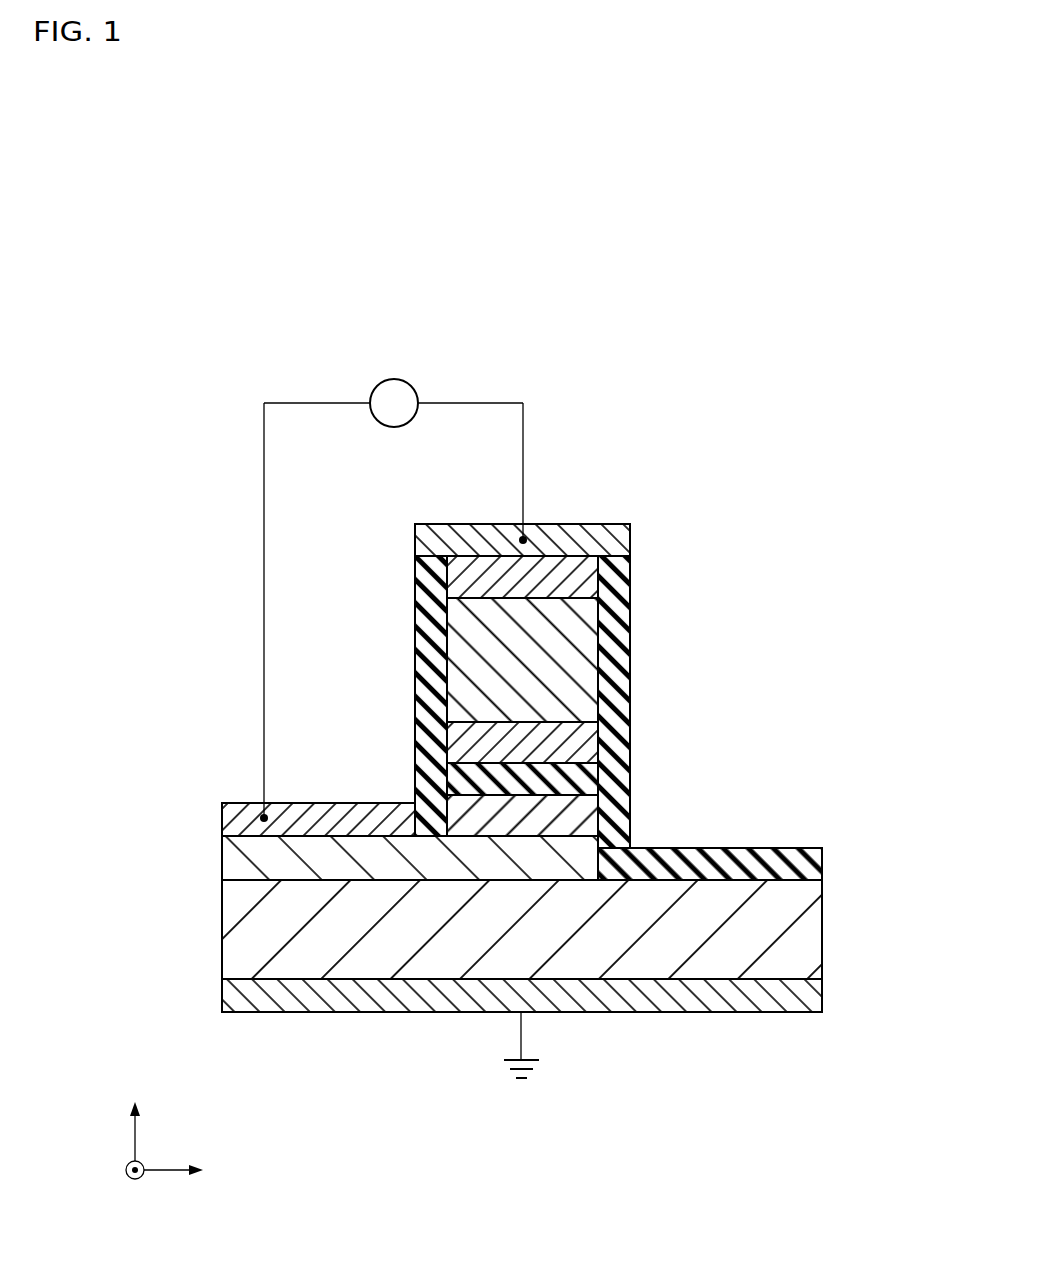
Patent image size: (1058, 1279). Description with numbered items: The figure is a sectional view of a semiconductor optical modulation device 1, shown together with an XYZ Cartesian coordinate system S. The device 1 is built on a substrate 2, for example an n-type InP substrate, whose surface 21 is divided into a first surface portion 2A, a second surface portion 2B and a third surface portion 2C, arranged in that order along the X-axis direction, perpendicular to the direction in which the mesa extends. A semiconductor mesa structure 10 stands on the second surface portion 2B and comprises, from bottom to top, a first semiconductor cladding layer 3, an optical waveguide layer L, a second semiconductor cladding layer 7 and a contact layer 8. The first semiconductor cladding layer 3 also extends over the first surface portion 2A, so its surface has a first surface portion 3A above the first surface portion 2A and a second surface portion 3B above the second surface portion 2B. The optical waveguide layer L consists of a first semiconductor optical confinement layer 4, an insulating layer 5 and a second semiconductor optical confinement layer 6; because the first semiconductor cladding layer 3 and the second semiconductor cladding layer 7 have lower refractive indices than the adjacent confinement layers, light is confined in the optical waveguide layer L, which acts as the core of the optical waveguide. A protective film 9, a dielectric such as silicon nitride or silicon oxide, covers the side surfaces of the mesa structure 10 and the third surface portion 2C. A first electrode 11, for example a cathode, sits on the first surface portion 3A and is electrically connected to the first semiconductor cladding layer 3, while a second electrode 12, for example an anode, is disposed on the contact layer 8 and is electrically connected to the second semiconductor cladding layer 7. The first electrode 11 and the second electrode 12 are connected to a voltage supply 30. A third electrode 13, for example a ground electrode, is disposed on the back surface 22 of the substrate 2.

The semiconductor optical modulation device 1 is at (213, 357).
The substrate 2 is at (822, 928).
The first surface portion 2A is at (444, 892).
The second surface portion 2B is at (596, 892).
The third surface portion 2C is at (820, 892).
The first semiconductor cladding layer 3 is at (596, 862).
The first surface portion 3A is at (444, 850).
The second surface portion 3B is at (596, 850).
The first semiconductor optical confinement layer 4 is at (590, 808).
The insulating layer 5 is at (590, 770).
The second semiconductor optical confinement layer 6 is at (590, 735).
The second semiconductor cladding layer 7 is at (590, 665).
The contact layer 8 is at (590, 578).
The protective film 9 is at (430, 674).
The semiconductor mesa structure 10 is at (741, 565).
The first electrode 11 is at (343, 816).
The second electrode 12 is at (630, 541).
The third electrode 13 is at (822, 995).
The surface 21 is at (240, 866).
The back surface 22 is at (240, 988).
The voltage supply 30 is at (412, 385).
The optical waveguide layer L is at (694, 700).
The XYZ Cartesian coordinate system S is at (134, 1140).